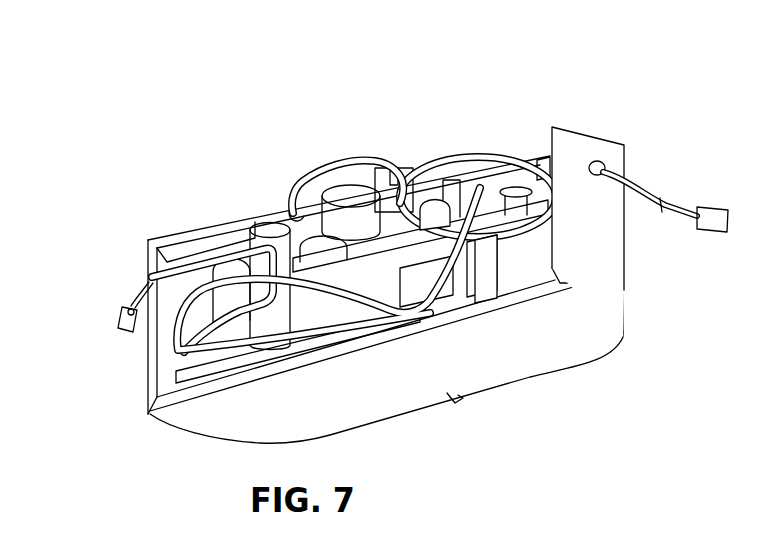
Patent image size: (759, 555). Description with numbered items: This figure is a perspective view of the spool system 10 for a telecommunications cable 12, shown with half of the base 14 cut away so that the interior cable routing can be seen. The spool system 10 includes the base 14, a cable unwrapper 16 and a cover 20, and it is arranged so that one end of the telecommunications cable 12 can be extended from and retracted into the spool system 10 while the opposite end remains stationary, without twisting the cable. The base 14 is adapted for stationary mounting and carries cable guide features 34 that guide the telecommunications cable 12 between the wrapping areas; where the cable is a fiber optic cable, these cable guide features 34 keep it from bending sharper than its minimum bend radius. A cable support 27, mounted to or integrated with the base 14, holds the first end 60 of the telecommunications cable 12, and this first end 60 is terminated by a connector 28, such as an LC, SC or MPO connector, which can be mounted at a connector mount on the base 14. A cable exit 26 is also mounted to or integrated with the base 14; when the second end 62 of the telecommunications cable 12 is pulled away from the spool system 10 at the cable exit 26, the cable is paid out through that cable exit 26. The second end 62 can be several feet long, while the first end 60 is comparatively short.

The spool system 10 is at (405, 148).
The telecommunications cable 12 is at (328, 168).
The base 14 is at (525, 368).
The cable unwrapper 16 is at (205, 320).
The cover 20 is at (447, 395).
The cable exit 26 is at (601, 164).
The cable support 27 is at (150, 270).
The connector 28 is at (712, 226).
The cable guide features 34 is at (325, 183).
The first end 60 is at (131, 294).
The second end 62 is at (677, 210).